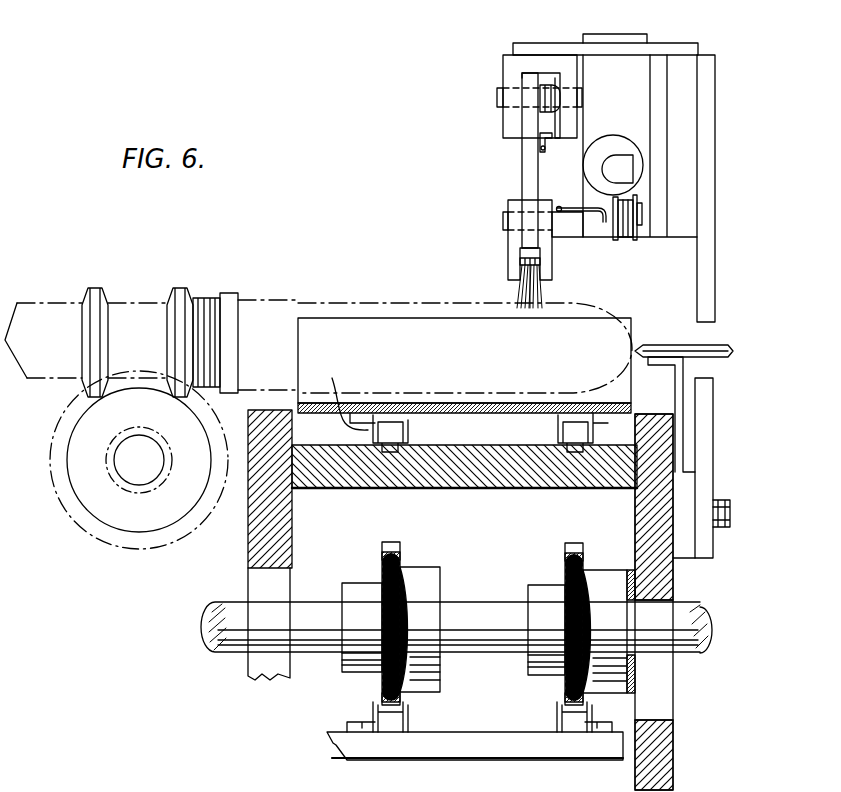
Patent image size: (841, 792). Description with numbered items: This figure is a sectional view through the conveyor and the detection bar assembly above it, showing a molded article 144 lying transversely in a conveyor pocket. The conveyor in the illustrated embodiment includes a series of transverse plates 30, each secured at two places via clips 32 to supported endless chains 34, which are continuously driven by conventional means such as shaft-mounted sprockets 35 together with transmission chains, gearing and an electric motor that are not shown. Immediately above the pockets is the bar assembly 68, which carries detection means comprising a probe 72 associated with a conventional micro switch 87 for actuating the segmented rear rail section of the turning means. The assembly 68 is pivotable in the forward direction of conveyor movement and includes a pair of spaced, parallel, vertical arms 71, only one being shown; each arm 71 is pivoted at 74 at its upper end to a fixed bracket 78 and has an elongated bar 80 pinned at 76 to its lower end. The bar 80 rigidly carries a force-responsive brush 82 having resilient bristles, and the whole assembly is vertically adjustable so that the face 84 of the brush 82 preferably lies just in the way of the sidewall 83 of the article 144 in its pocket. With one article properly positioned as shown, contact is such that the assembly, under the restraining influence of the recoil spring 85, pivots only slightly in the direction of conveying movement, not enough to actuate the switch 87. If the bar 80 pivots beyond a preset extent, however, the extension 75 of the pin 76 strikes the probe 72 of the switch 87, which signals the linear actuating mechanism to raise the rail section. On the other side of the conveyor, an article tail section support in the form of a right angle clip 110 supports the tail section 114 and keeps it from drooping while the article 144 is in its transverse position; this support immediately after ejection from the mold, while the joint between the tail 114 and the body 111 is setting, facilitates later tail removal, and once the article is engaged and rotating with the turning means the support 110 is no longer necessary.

The transverse plate 30 is at (331, 380).
The clip 32 is at (350, 394).
The endless chain 34 is at (398, 432).
The shaft-mounted sprocket 35 is at (390, 572).
The bar assembly 68 is at (489, 159).
The vertical arm 71 is at (520, 172).
The probe 72 is at (593, 212).
The pivot 74 is at (498, 100).
The extension 75 is at (563, 238).
The pin 76 is at (505, 218).
The fixed bracket 78 is at (505, 72).
The elongated bar 80 is at (510, 248).
The force-responsive brush 82 is at (518, 292).
The sidewall 83 is at (389, 300).
The brush face 84 is at (533, 306).
The recoil spring 85 is at (545, 125).
The micro switch 87 is at (618, 72).
The right angle clip 110 is at (683, 366).
The body 111 is at (323, 312).
The tail section 114 is at (712, 345).
The article 144 is at (274, 296).